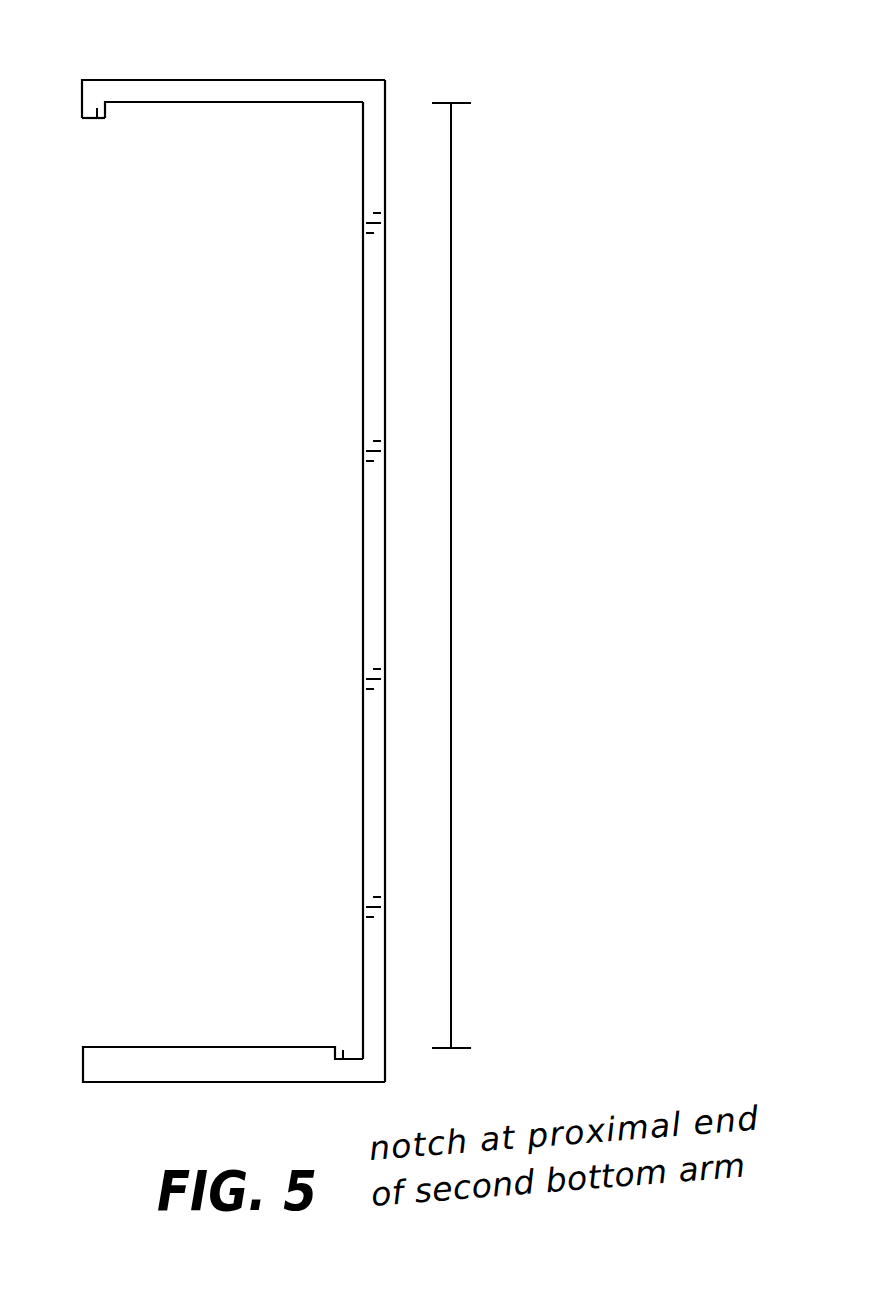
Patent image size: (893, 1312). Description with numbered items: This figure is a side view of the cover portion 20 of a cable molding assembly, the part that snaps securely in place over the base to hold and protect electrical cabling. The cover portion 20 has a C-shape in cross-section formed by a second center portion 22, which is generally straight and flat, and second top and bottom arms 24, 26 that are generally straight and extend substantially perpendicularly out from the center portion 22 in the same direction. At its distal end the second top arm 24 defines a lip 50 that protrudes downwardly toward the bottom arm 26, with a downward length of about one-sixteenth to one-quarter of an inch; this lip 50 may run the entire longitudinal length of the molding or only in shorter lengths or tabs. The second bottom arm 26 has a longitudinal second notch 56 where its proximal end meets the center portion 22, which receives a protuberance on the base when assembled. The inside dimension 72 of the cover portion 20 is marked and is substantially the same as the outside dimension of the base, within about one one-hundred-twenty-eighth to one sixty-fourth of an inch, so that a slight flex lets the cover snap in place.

The cover portion 20 is at (242, 576).
The second center portion 22 is at (374, 342).
The second top arm 24 is at (170, 93).
The second bottom arm 26 is at (215, 1063).
The lip 50 is at (96, 111).
The second notch 56 is at (345, 1053).
The inside dimension 72 is at (452, 347).